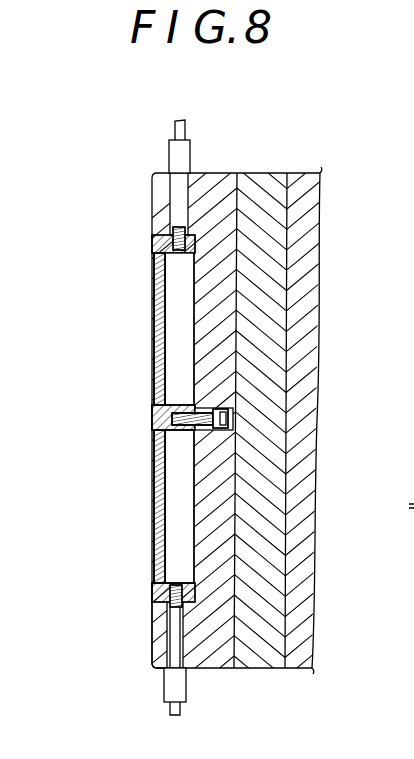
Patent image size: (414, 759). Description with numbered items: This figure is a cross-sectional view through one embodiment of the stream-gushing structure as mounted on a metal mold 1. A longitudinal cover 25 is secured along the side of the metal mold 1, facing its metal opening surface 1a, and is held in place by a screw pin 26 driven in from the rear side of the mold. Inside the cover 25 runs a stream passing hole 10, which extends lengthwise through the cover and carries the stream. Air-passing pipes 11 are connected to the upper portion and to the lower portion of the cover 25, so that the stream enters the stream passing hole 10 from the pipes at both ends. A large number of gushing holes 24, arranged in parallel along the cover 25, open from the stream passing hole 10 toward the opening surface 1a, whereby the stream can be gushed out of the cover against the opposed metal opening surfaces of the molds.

The stationary metal mold 1 is at (316, 117).
The metal opening surface 1a is at (157, 612).
The stream passing hole 10 is at (180, 527).
The air-passing pipe 11 is at (174, 127).
The gushing hole 24 is at (151, 503).
The longitudinal cover 25 is at (153, 297).
The screw pin 26 is at (203, 408).